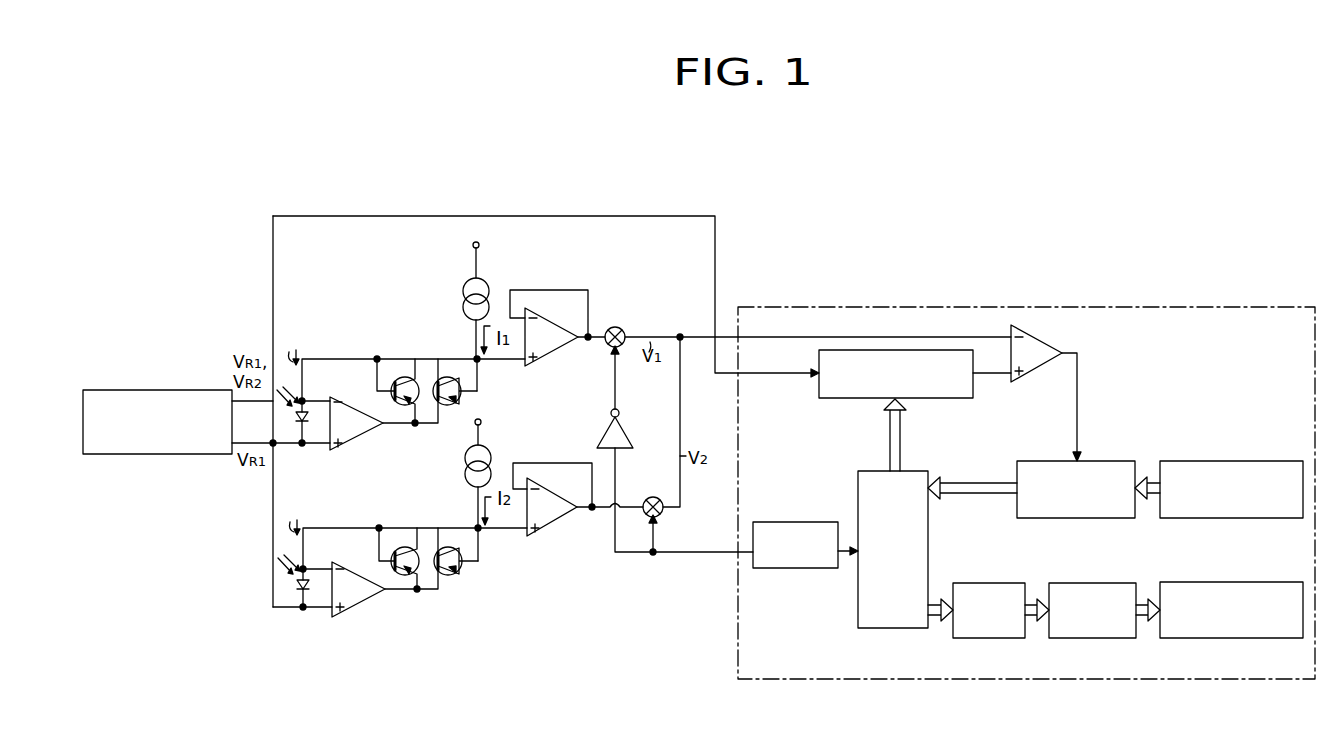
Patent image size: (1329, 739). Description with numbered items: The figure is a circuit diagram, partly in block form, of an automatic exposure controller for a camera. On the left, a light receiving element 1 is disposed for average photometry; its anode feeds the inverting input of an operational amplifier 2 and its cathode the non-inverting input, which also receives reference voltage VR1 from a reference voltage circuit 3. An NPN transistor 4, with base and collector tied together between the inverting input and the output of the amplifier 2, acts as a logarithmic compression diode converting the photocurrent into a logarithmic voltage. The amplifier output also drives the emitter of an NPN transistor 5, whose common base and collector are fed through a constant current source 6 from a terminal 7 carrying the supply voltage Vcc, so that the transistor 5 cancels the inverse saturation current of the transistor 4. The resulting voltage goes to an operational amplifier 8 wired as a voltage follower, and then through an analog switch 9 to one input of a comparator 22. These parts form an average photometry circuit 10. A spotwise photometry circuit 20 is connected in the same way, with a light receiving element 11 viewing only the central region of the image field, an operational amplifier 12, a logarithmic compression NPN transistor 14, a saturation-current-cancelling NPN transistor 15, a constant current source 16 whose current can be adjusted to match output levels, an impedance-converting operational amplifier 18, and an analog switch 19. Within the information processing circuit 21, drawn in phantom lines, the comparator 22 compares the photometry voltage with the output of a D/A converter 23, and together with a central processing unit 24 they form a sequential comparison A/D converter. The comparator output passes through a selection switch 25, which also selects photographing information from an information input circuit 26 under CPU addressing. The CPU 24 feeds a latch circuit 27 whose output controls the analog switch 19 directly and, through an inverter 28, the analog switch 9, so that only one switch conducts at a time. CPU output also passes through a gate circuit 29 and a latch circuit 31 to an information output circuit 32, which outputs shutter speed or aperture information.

The light receiving element 1 is at (307, 415).
The operational amplifier 2 is at (356, 436).
The reference voltage circuit 3 is at (180, 388).
The NPN transistor 4 is at (390, 396).
The NPN transistor 5 is at (438, 378).
The constant current source 6 is at (484, 284).
The terminal 7 is at (479, 244).
The operational amplifier 8 is at (552, 345).
The analog switch 9 is at (621, 330).
The average photometry circuit 10 is at (402, 332).
The light receiving element 11 is at (306, 590).
The operational amplifier 12 is at (355, 603).
The NPN transistor 14 is at (414, 548).
The NPN transistor 15 is at (460, 570).
The constant current source 16 is at (486, 452).
The operational amplifier 18 is at (550, 515).
The analog switch 19 is at (653, 494).
The spotwise photometry circuit 20 is at (400, 514).
The information processing circuit 21 is at (1000, 306).
The comparator 22 is at (1043, 342).
The D/A converter 23 is at (965, 360).
The central processing unit 24 is at (858, 478).
The selection switch 25 is at (1122, 461).
The information input circuit 26 is at (1263, 461).
The latch circuit 27 is at (787, 522).
The inverter 28 is at (626, 437).
The gate circuit 29 is at (1012, 583).
The latch circuit 31 is at (1115, 583).
The information output circuit 32 is at (1268, 582).